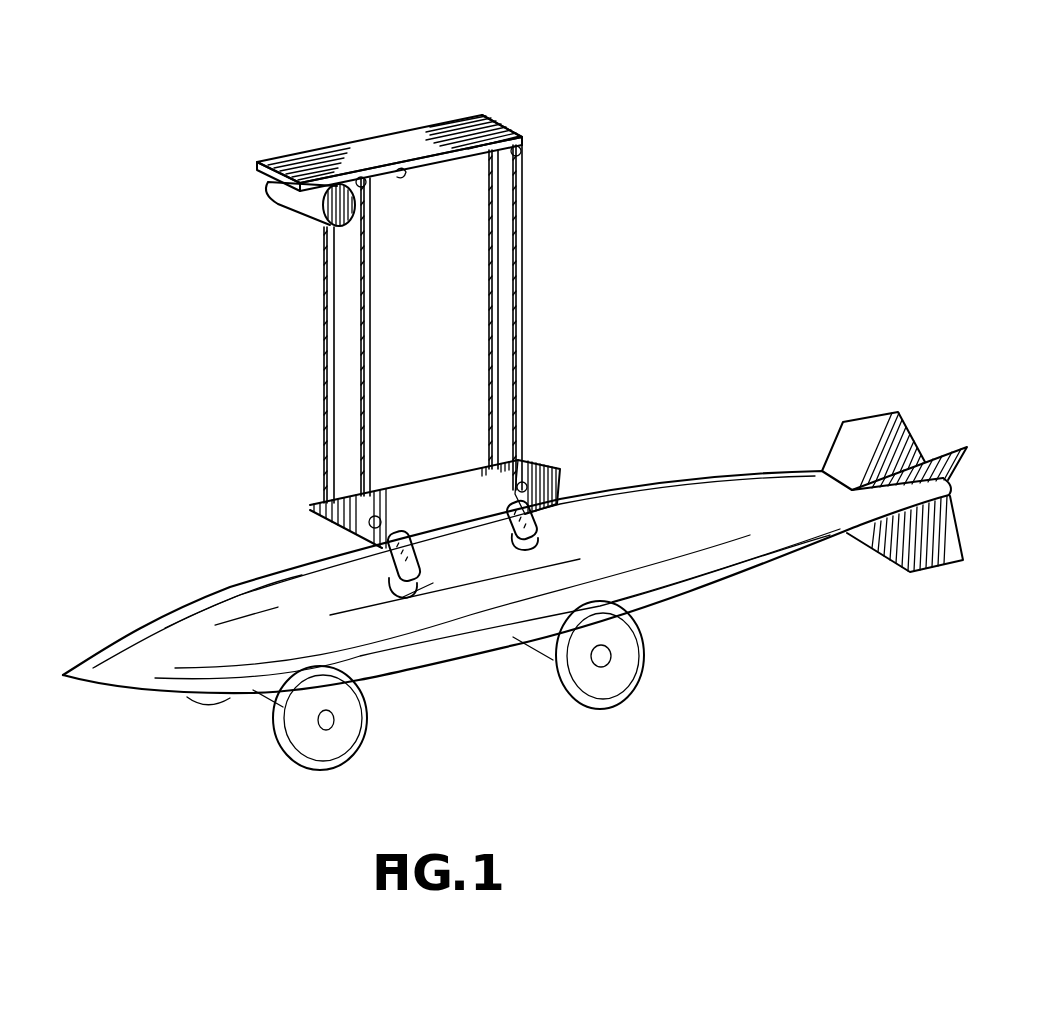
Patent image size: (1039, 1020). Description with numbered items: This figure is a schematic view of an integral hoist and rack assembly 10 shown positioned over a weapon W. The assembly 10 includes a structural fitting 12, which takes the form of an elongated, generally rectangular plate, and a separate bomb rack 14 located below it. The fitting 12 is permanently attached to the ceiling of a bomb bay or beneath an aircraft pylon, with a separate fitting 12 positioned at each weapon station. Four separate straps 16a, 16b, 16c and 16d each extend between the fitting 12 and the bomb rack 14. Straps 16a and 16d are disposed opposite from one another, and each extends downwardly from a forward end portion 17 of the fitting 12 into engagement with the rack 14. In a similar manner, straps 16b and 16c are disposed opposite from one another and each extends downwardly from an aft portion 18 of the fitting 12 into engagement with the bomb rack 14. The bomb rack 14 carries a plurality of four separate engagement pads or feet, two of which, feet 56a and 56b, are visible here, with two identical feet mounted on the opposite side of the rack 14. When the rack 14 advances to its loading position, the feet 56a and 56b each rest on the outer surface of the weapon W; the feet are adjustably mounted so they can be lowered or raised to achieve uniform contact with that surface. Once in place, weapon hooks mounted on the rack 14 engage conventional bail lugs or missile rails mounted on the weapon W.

The integral hoist and rack assembly 10 is at (460, 316).
The structural fitting 12 is at (384, 147).
The bomb rack 14 is at (460, 487).
The strap 16a is at (358, 332).
The strap 16b is at (520, 264).
The strap 16c is at (489, 300).
The strap 16d is at (318, 282).
The forward end portion 17 is at (283, 163).
The aft portion 18 is at (497, 123).
The engagement pad or foot 56a is at (392, 574).
The engagement pad or foot 56b is at (560, 530).
The weapon W is at (660, 578).